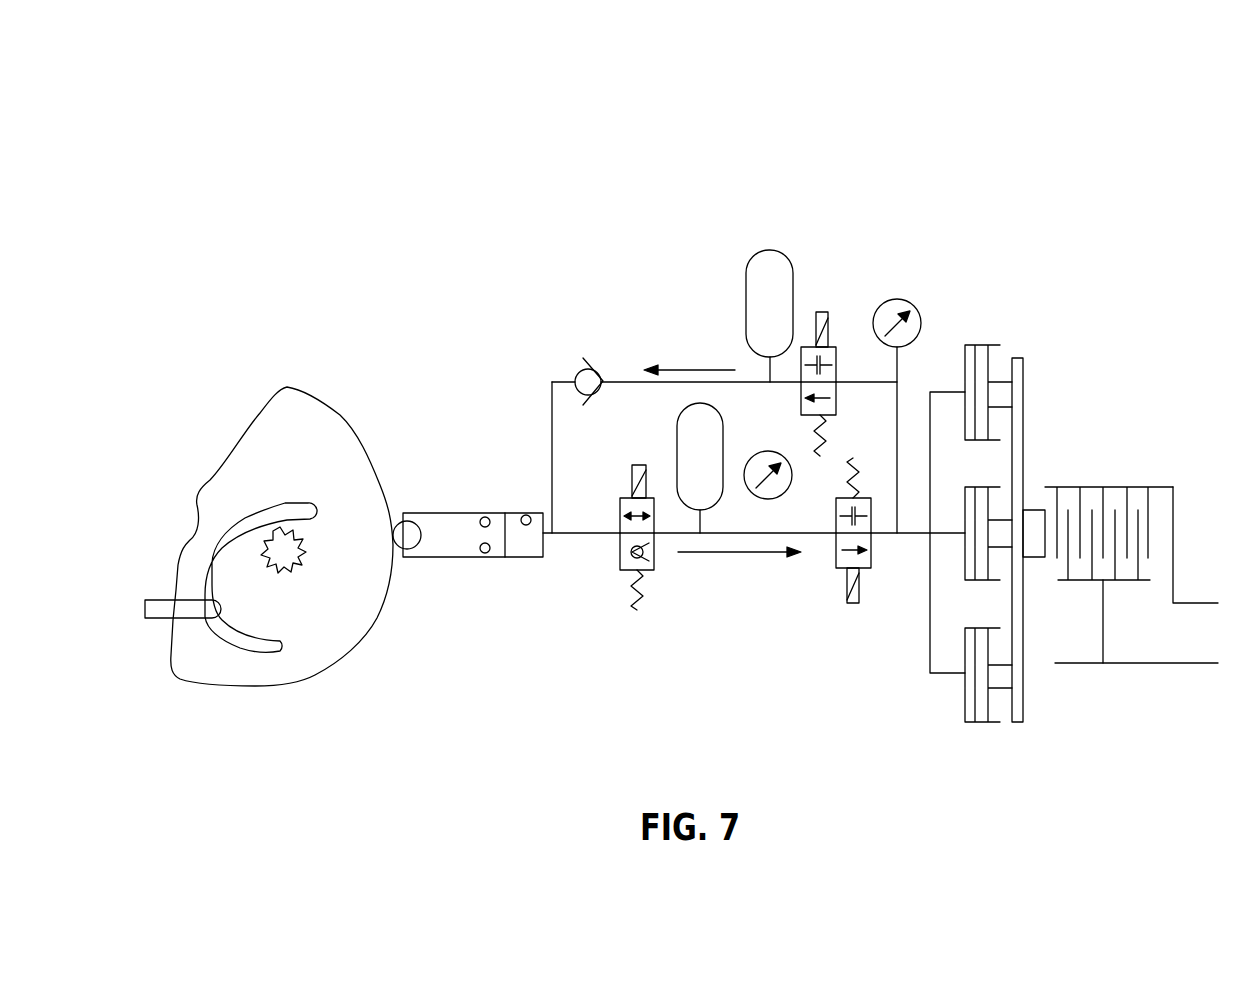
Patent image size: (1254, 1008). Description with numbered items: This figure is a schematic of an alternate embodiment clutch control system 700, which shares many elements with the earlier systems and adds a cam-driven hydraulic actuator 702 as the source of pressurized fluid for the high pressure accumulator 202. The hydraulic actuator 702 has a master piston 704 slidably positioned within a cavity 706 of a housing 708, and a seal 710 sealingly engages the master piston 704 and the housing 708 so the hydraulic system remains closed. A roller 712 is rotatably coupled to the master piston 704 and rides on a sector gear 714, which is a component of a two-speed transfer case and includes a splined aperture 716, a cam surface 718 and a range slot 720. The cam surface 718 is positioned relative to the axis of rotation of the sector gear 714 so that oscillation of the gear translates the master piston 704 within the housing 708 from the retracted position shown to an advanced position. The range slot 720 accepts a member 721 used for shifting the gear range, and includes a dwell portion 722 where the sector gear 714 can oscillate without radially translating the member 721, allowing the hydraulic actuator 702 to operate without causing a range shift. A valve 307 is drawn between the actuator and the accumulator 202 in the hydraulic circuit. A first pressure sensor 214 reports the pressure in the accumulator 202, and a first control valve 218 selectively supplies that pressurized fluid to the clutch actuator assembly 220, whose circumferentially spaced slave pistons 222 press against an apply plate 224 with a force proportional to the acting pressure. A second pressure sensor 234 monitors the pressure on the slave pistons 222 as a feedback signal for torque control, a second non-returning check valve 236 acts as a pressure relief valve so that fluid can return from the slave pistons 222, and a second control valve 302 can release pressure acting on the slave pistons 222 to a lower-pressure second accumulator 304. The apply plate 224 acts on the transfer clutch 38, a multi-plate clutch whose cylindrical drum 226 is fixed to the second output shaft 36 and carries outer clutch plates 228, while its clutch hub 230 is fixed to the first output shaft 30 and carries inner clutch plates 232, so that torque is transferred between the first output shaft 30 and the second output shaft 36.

The clutch control system 700 is at (413, 150).
The hydraulic actuator 702 is at (486, 607).
The master piston 704 is at (435, 517).
The cavity 706 is at (518, 515).
The housing 708 is at (532, 558).
The seal 710 is at (489, 554).
The roller 712 is at (405, 548).
The sector gear 714 is at (279, 421).
The splined aperture 716 is at (284, 570).
The cam surface 718 is at (368, 423).
The range slot 720 is at (215, 632).
The member 721 is at (158, 600).
The dwell portion 722 is at (284, 504).
The accumulator 202 is at (705, 510).
The first pressure sensor 214 is at (793, 473).
The first control valve 218 is at (871, 568).
The clutch actuator assembly 220 is at (1062, 591).
The slave pistons 222 is at (983, 706).
The apply plate 224 is at (1017, 707).
The cylindrical drum 226 is at (1068, 487).
The outer clutch plates 228 is at (1126, 513).
The clutch hub 230 is at (1104, 627).
The inner clutch plates 232 is at (1067, 565).
The second pressure sensor 234 is at (890, 300).
The second non-returning check valve 236 is at (595, 364).
The second control valve 302 is at (806, 347).
The second accumulator 304 is at (768, 250).
The flow control valve 307 is at (620, 567).
The first output shaft 30 is at (1150, 665).
The second output shaft 36 is at (1193, 601).
The transfer clutch 38 is at (1107, 398).